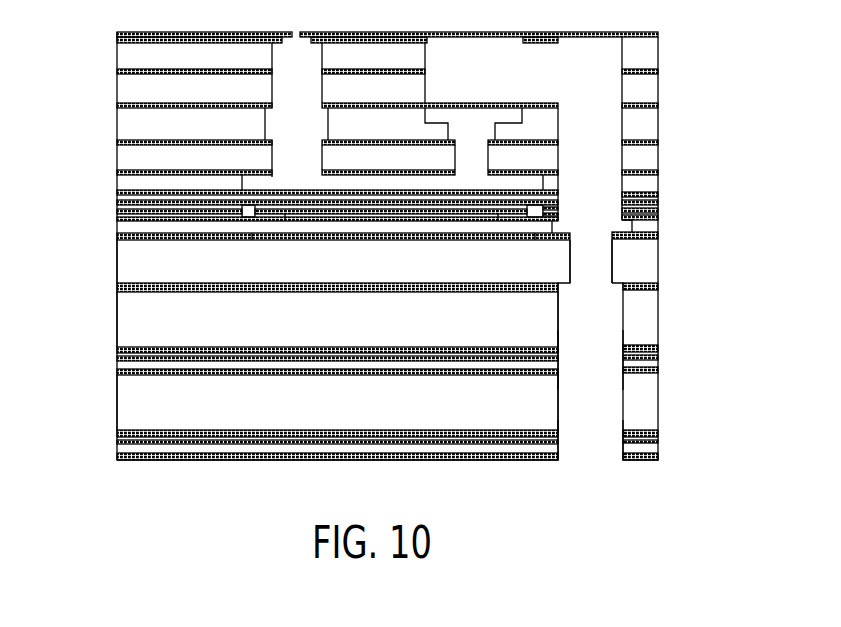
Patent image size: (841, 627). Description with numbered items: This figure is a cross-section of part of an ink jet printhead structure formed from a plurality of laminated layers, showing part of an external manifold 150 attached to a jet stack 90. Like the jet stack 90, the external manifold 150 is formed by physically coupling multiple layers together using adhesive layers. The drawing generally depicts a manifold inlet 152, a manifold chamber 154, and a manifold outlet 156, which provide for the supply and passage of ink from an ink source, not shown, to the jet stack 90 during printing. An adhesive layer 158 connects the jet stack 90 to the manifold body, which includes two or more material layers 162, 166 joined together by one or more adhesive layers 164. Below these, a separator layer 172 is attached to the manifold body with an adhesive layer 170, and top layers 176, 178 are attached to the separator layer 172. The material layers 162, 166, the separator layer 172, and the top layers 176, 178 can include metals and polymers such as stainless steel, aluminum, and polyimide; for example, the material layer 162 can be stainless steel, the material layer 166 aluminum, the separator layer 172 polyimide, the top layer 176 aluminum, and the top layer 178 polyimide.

The jet stack 90 is at (682, 32).
The external manifold 150 is at (682, 233).
The manifold inlet 152 is at (590, 461).
The manifold chamber 154 is at (607, 362).
The manifold outlet 156 is at (589, 276).
The adhesive layer 158 is at (118, 237).
The material layer 162 is at (120, 262).
The adhesive layer 164 is at (120, 288).
The material layer 166 is at (122, 315).
The adhesive layer 170 is at (117, 352).
The separator layer 172 is at (116, 363).
The top layer 176 is at (122, 405).
The top layer 178 is at (122, 445).